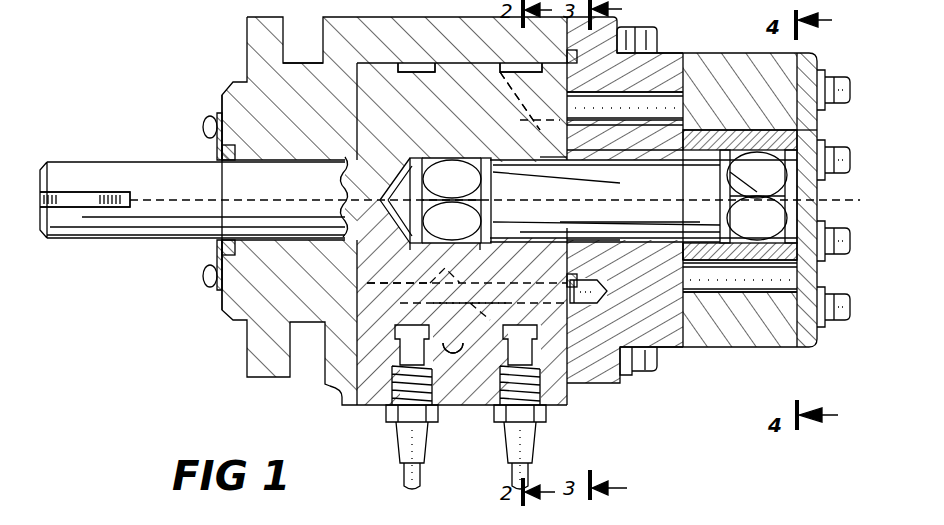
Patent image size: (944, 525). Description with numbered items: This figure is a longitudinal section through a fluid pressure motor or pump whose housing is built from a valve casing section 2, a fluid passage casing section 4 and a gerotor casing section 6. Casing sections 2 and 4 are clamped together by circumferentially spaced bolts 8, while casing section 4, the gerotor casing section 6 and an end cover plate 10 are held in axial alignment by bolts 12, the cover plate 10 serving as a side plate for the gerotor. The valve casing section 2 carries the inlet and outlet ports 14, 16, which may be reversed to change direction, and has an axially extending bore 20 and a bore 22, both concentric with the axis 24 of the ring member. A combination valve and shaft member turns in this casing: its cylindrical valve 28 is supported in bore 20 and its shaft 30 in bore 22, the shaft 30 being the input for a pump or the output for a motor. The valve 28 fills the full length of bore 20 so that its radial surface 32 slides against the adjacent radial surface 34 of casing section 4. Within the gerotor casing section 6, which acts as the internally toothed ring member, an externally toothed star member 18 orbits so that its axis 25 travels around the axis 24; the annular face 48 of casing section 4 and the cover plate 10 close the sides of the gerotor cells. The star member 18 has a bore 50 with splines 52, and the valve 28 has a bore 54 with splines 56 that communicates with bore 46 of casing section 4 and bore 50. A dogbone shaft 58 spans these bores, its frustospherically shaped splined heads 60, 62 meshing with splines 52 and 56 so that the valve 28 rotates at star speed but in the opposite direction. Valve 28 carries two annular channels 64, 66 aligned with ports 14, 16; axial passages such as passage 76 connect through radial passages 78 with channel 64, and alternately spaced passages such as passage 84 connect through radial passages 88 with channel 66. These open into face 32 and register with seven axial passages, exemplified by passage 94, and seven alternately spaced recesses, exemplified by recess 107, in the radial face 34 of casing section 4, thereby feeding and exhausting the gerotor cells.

The valve casing section 2 is at (376, 398).
The fluid passage casing section 4 is at (660, 60).
The gerotor casing section 6 is at (758, 348).
The bolts 8 is at (655, 362).
The end cover plate 10 is at (814, 350).
The bolts 12 is at (836, 80).
The inlet port 14 is at (398, 443).
The outlet port 16 is at (506, 443).
The star member 18 is at (810, 134).
The bore 20 is at (357, 68).
The bore 22 is at (258, 166).
The axis of ring member 24 is at (157, 200).
The axis of star member 25 is at (730, 175).
The valve 28 is at (455, 346).
The shaft 30 is at (70, 164).
The radial surface of valve 32 is at (565, 147).
The radial surface of casing section 4 34 is at (572, 140).
The bore of casing section 4 46 is at (608, 238).
The annular face 48 is at (686, 330).
The bore of star member 50 is at (683, 240).
The splines 52 is at (683, 262).
The bore of valve 54 is at (418, 246).
The splines 56 is at (480, 245).
The dogbone shaft 58 is at (650, 210).
The head of dogbone 60 is at (726, 205).
The head of dogbone 62 is at (490, 195).
The annular channel 64 is at (412, 62).
The annular channel 66 is at (510, 62).
The axial passage 76 is at (452, 296).
The radial passages 78 is at (400, 322).
The axial passage 84 is at (535, 118).
The radial passages 88 is at (520, 80).
The axial passage 94 is at (660, 90).
The recess 107 is at (580, 305).